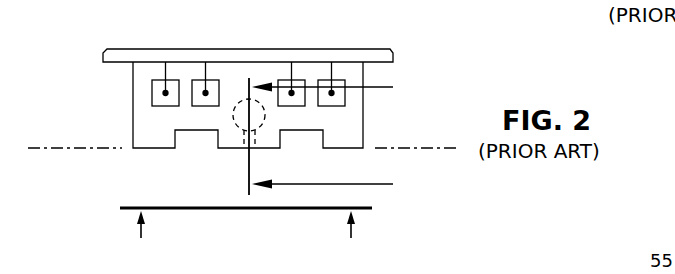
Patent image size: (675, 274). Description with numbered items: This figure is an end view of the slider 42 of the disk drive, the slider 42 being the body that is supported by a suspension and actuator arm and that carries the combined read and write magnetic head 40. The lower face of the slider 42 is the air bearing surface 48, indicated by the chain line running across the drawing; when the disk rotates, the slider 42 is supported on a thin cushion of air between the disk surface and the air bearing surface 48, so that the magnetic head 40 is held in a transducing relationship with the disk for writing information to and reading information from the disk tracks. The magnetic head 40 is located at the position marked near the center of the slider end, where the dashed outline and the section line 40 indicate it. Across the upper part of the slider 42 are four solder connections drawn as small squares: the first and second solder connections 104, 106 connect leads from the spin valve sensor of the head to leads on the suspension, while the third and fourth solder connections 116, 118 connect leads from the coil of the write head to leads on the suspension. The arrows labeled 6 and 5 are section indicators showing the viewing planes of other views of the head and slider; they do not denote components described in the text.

The slider 42 is at (132, 93).
The first solder connection 104 is at (152, 80).
The third solder connection 116 is at (192, 80).
The fourth solder connection 118 is at (278, 80).
The second solder connection 106 is at (318, 80).
The air bearing surface (ABS) 48 is at (57, 148).
The magnetic head 40 is at (239, 127).
The section view direction arrows 6 is at (331, 137).
The section view direction arrows 5 is at (246, 241).